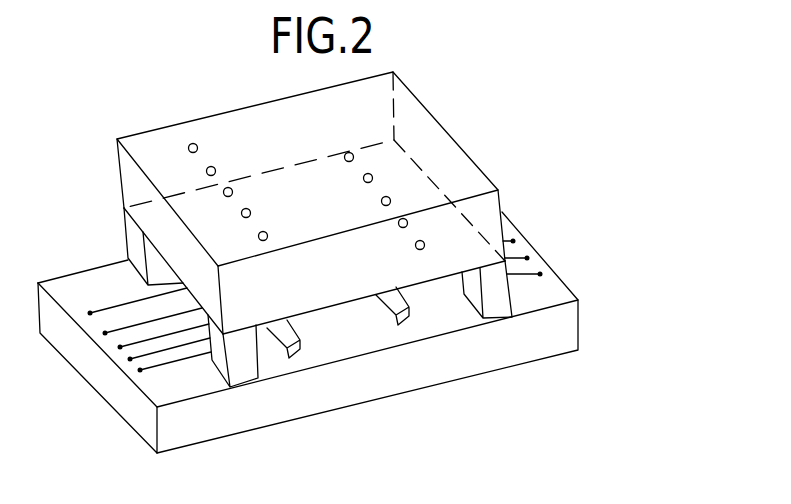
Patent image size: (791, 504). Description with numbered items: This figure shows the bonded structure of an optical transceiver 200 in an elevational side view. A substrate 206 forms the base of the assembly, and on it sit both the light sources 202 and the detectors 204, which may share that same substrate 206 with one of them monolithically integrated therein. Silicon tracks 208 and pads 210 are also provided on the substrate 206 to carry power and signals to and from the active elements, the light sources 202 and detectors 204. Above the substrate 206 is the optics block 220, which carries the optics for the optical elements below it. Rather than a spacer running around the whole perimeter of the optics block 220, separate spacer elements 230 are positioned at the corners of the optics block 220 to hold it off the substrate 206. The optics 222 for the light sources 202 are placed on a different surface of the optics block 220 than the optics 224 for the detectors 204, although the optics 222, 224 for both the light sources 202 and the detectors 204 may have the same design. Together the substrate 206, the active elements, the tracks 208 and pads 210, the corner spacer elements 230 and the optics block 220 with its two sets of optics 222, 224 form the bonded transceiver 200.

The transceiver 200 is at (613, 247).
The light sources 202 is at (290, 356).
The detectors 204 is at (398, 326).
The substrate 206 is at (580, 325).
The silicon tracks 208 is at (140, 370).
The pads 210 is at (520, 240).
The optics block 220 is at (452, 136).
The optics for light sources 222 is at (190, 143).
The optics for detectors 224 is at (373, 177).
The spacer elements 230 is at (123, 232).